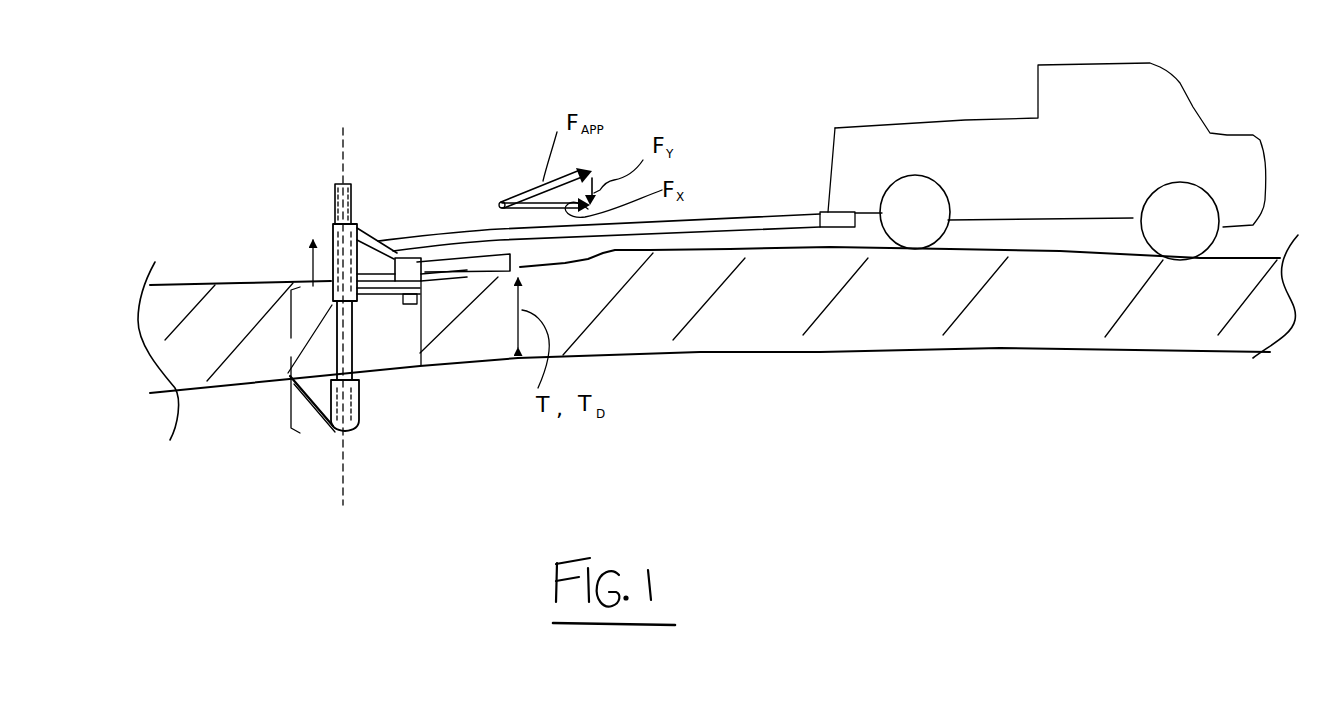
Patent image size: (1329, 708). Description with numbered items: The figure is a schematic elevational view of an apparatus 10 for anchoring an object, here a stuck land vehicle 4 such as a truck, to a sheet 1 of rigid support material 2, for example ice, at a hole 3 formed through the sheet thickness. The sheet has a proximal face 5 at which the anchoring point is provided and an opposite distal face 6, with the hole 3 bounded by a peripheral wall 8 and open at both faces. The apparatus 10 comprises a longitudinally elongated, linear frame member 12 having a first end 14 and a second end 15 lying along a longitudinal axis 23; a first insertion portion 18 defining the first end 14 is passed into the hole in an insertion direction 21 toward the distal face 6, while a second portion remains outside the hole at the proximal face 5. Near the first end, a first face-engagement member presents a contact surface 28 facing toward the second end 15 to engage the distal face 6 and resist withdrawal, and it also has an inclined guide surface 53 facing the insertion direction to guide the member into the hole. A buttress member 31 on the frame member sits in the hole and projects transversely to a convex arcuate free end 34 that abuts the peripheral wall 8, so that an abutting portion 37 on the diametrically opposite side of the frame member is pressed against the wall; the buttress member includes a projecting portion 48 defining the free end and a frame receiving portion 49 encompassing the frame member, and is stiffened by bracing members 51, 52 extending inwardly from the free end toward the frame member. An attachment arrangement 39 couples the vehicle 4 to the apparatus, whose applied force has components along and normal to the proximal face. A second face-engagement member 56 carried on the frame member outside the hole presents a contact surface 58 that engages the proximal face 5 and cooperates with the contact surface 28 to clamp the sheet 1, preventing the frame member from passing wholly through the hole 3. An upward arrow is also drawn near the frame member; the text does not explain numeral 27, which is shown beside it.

The sheet 1 is at (209, 275).
The rigid support material 2 is at (237, 298).
The hole 3 is at (400, 357).
The land vehicle 4 is at (965, 120).
The proximal face 5 is at (264, 292).
The distal face 6 is at (243, 393).
The peripheral wall 8 is at (423, 365).
The apparatus 10 is at (386, 120).
The frame member 12 is at (353, 200).
The first end 14 is at (386, 410).
The second end 15 is at (350, 193).
The first insertion portion 18 is at (278, 360).
The insertion direction 21 is at (360, 408).
The longitudinal axis 23 is at (313, 290).
The pull-out direction 27 is at (300, 292).
The contact surface 28 is at (328, 432).
The buttress member 31 is at (425, 303).
The free end 34 is at (423, 278).
The abutting portion 37 is at (272, 295).
The attachment arrangement 39 is at (393, 229).
The projecting portion 48 is at (452, 293).
The frame receiving portion 49 is at (342, 160).
The bracing member 51 is at (364, 246).
The bracing member 52 is at (403, 294).
The guide surface 53 is at (325, 432).
The second face-engagement member 56 is at (453, 262).
The contact surface 58 is at (473, 272).